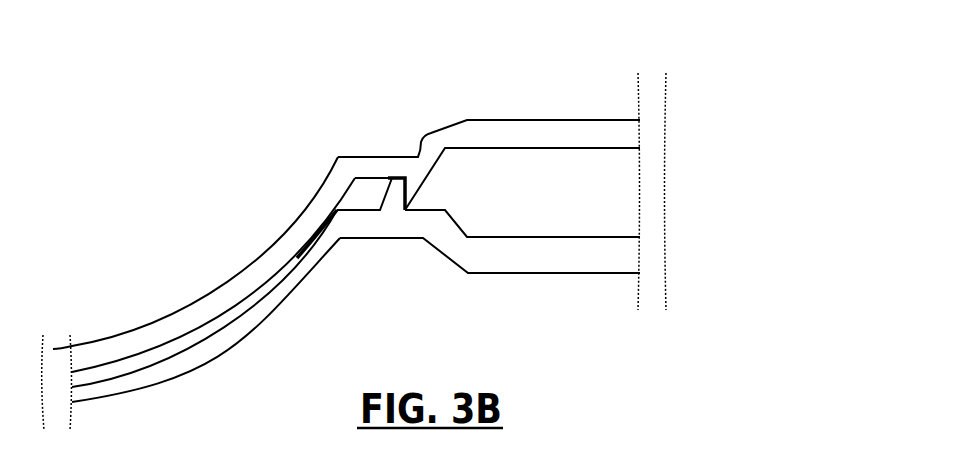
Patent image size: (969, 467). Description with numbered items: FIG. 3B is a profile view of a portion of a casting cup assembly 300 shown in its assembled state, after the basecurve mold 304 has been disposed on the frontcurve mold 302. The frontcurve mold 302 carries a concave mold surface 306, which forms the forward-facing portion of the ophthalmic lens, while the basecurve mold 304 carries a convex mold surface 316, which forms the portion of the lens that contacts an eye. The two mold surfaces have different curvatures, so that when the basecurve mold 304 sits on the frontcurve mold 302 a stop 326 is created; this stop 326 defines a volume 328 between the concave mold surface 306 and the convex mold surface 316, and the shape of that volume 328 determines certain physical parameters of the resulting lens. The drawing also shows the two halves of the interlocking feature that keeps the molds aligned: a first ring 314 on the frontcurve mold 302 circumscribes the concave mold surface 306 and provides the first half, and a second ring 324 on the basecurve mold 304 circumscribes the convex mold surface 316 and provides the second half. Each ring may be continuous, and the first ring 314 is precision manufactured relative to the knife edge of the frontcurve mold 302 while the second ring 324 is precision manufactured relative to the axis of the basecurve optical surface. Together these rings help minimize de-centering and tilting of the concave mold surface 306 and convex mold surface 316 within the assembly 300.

The casting cup assembly 300 is at (130, 159).
The frontcurve mold 302 is at (537, 275).
The basecurve mold 304 is at (508, 118).
The concave mold surface 306 is at (150, 374).
The first ring 314 is at (394, 195).
The convex mold surface 316 is at (258, 287).
The second ring 324 is at (414, 192).
The stop 326 is at (330, 209).
The volume 328 is at (153, 363).